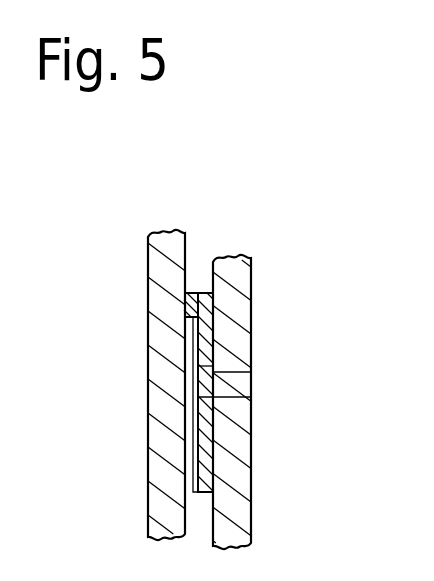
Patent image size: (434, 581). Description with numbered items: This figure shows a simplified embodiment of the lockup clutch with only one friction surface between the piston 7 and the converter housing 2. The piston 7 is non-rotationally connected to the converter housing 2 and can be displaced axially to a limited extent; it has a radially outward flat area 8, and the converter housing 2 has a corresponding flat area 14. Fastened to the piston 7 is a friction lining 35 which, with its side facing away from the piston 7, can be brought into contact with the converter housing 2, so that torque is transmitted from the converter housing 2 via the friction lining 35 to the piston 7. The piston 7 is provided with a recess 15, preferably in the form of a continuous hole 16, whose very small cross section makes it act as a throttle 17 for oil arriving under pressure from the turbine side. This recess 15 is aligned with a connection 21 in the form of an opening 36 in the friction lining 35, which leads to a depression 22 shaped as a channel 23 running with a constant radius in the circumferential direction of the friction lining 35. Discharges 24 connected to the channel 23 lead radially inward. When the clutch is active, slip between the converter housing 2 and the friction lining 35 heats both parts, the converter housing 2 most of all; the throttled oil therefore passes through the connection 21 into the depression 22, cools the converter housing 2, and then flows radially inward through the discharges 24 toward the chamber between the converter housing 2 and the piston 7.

The converter housing 2 is at (165, 254).
The piston 7 is at (238, 270).
The radially outward flat area 8 is at (200, 330).
The flat area of the converter housing 14 is at (193, 344).
The recess 15 is at (252, 371).
The continuous hole 16 is at (222, 381).
The throttle 17 is at (206, 388).
The connection 21 is at (215, 400).
The depression 22 is at (186, 383).
The channel 23 is at (196, 372).
The discharges 24 is at (194, 473).
The friction lining 35 is at (205, 450).
The opening 36 is at (198, 292).